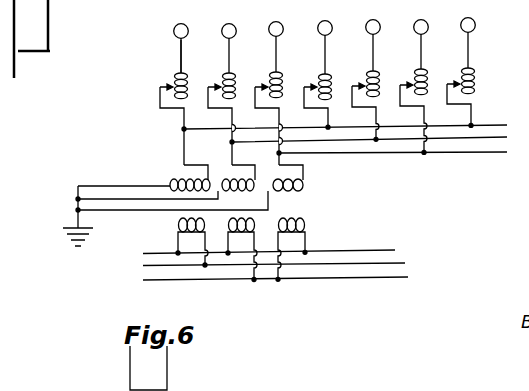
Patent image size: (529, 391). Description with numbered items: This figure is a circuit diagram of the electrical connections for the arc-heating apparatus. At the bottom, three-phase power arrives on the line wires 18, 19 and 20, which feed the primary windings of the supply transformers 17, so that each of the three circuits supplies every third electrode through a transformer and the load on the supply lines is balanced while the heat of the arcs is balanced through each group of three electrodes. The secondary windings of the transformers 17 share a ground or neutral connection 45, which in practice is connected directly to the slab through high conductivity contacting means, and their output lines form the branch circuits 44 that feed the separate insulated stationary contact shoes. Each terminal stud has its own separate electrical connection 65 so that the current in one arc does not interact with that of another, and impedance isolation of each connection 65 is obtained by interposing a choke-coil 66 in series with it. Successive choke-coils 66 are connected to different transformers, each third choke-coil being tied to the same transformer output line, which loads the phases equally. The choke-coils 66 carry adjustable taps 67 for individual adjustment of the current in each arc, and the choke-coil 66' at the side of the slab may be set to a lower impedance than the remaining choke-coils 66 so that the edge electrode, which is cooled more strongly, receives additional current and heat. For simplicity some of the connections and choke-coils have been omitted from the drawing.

The branch circuit 44 is at (173, 51).
The electrical connection 65 is at (189, 30).
The choke-coil 66' is at (154, 114).
The choke-coil 66 is at (356, 113).
The adjustable tap 67 is at (320, 80).
The ground or neutral connection 45 is at (78, 199).
The transformer 17 is at (313, 170).
The line wire 18 is at (377, 250).
The line wire 19 is at (390, 263).
The line wire 20 is at (405, 277).